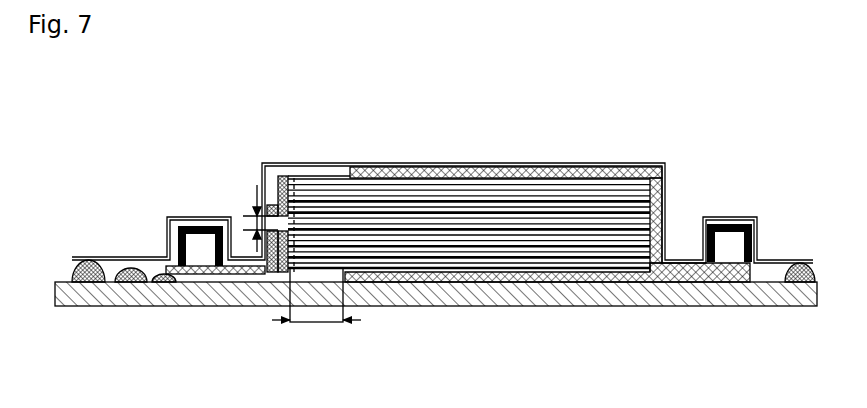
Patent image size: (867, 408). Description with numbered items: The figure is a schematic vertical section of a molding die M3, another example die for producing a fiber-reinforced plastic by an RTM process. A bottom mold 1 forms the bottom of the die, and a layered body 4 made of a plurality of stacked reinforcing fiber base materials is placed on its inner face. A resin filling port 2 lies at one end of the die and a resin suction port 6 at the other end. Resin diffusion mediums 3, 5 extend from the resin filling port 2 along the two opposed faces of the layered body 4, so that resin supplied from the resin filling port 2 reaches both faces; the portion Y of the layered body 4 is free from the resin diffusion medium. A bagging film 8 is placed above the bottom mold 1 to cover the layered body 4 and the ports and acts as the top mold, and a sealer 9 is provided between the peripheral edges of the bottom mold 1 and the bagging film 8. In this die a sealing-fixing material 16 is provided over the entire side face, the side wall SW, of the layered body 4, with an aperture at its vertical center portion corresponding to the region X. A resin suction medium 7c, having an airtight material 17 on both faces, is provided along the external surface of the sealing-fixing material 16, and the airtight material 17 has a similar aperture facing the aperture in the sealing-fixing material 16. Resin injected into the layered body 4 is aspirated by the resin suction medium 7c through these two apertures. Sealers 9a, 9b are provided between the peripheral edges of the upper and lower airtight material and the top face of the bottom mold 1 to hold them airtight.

The bottom mold 1 is at (767, 305).
The resin filling port 2 is at (733, 225).
The resin diffusion medium 3 is at (585, 272).
The layered body 4 is at (550, 202).
The resin diffusion medium 5 is at (637, 172).
The resin suction port 6 is at (202, 258).
The resin suction medium 7c is at (202, 268).
The bagging film 8 is at (363, 163).
The sealer 9 is at (72, 262).
The sealer 9a is at (121, 280).
The sealer 9b is at (163, 278).
The sealing-fixing material 16 is at (275, 178).
The airtight material 17 is at (223, 238).
The side wall SW is at (297, 218).
The region X is at (256, 222).
The portion Y free from the resin diffusion medium Y is at (316, 309).
The molding die M3 is at (703, 163).